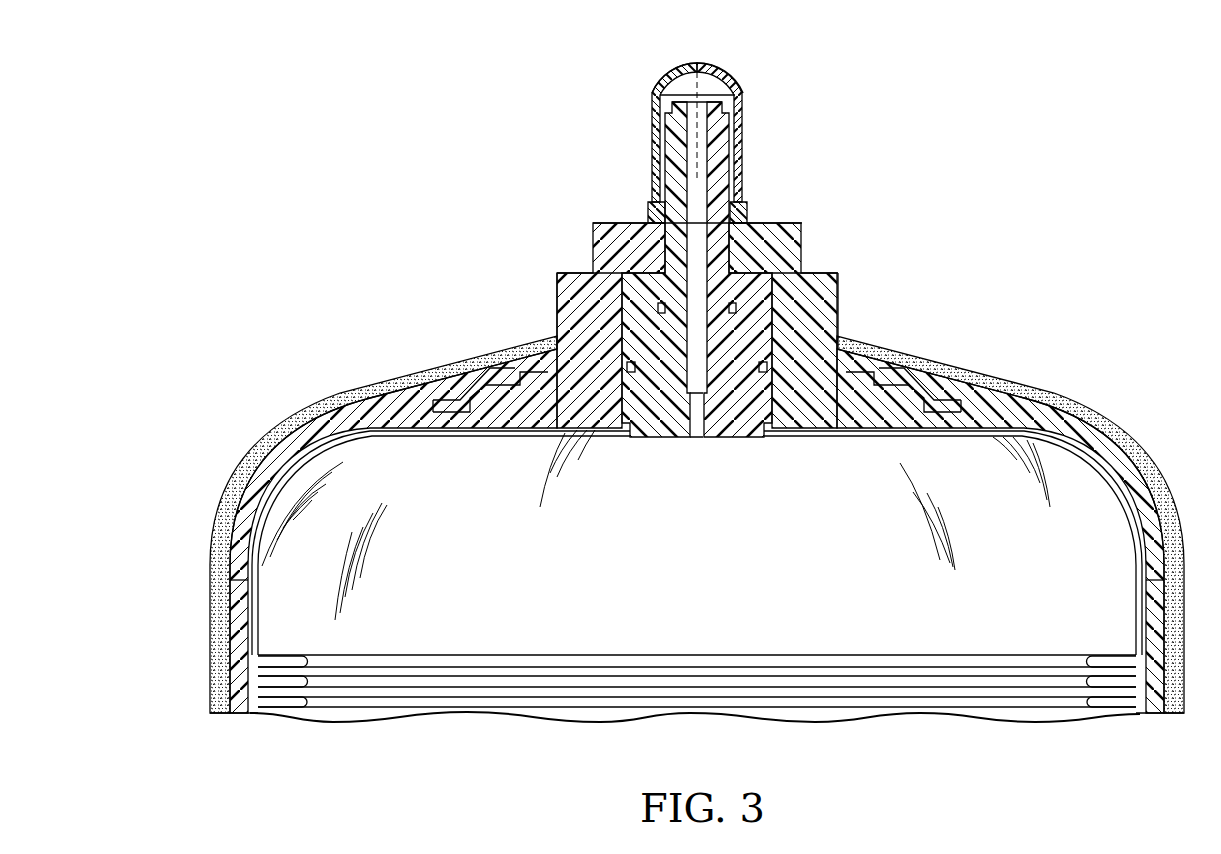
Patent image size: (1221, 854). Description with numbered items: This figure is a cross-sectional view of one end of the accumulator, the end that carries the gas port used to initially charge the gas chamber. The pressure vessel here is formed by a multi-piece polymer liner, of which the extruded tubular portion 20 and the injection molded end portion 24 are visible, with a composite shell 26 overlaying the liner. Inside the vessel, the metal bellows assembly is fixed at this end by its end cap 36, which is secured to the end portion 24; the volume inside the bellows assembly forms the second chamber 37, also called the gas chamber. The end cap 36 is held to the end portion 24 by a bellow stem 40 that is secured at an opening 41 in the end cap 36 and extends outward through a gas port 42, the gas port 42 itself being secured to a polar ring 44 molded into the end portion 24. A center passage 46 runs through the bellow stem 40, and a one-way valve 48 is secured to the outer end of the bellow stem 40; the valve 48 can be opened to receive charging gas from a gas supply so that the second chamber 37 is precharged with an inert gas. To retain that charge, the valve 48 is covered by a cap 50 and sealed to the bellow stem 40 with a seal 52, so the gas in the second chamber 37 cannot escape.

The tubular portion 20 is at (238, 627).
The end portion 24 is at (399, 408).
The composite shell 26 is at (1052, 388).
The end cap 36 is at (332, 448).
The second chamber 37 is at (712, 562).
The bellow stem 40 is at (678, 168).
The opening 41 is at (672, 416).
The gas port 42 is at (802, 248).
The polar ring 44 is at (838, 298).
The center passage 46 is at (735, 222).
The one-way valve 48 is at (730, 106).
The cap 50 is at (672, 73).
The seal 52 is at (650, 217).